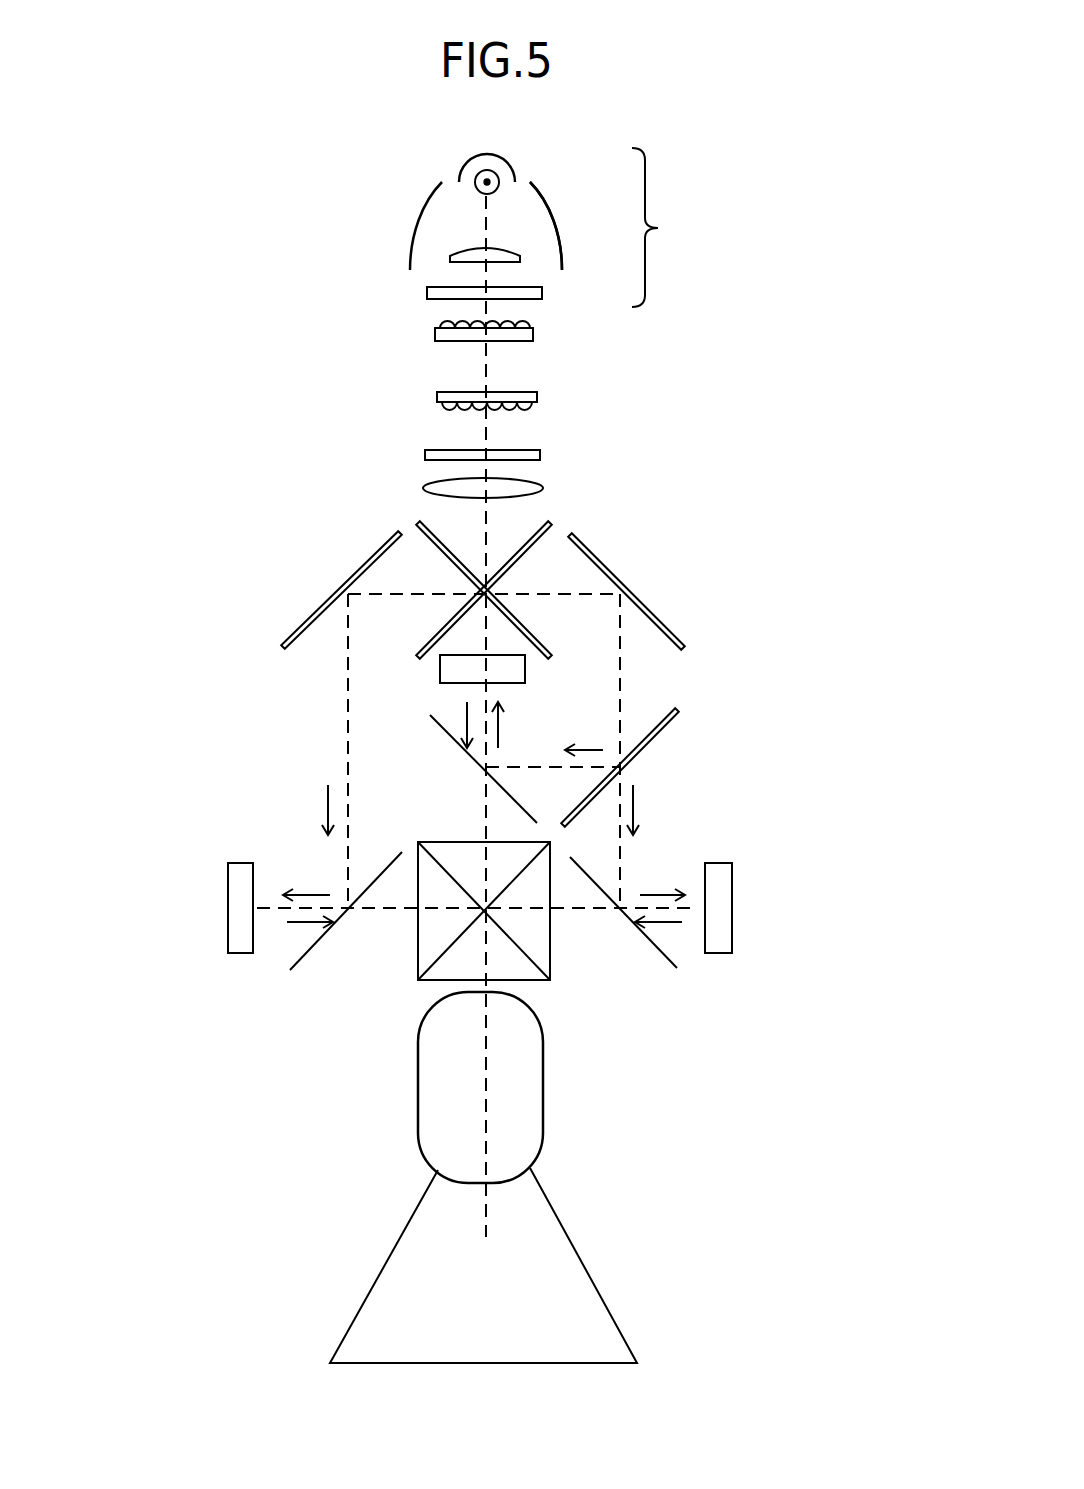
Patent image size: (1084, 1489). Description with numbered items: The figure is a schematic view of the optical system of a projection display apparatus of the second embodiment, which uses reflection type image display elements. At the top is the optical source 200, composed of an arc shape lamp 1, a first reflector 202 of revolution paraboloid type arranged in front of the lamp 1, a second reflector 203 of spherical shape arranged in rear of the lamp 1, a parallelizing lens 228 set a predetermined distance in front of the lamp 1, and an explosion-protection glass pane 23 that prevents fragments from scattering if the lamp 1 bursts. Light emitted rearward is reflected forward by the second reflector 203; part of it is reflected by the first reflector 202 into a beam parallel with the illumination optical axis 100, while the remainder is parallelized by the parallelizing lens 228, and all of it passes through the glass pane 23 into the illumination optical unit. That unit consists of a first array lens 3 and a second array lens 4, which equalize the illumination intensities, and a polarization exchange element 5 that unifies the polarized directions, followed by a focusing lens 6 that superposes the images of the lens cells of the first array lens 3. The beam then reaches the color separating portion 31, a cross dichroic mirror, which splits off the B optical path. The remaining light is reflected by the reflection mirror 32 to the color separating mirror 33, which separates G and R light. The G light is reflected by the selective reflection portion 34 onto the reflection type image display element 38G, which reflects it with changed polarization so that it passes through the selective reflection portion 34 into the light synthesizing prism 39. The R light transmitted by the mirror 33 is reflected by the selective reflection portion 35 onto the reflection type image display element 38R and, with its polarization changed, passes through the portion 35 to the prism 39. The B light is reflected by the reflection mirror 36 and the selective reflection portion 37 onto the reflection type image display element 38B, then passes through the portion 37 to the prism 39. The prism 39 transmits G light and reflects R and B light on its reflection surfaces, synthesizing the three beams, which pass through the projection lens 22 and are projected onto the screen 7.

The optical source 200 is at (670, 227).
The second reflector 203 is at (467, 168).
The first reflector 202 is at (530, 188).
The arc shape lamp 1 is at (497, 188).
The parallelizing lens 228 is at (457, 253).
The explosion-protection glass pane 23 is at (513, 298).
The first array lens 3 is at (450, 332).
The second array lens 4 is at (450, 395).
The polarization exchange element 5 is at (443, 452).
The focusing lens 6 is at (443, 490).
The illumination optical axis 100 is at (490, 377).
The color separating portion 31 is at (540, 532).
The reflection mirror 32 is at (643, 598).
The color separating mirror 33 is at (653, 737).
The selective reflection portion 34 is at (470, 755).
The selective reflection portion 35 is at (658, 960).
The reflection mirror 36 is at (330, 597).
The selective reflection portion 37 is at (313, 948).
The reflection type image display element 38R is at (722, 940).
The reflection type image display element 38G is at (447, 672).
The reflection type image display element 38B is at (235, 923).
The light synthesizing prism 39 is at (515, 958).
The projection lens 22 is at (420, 1142).
The screen 7 is at (367, 1363).